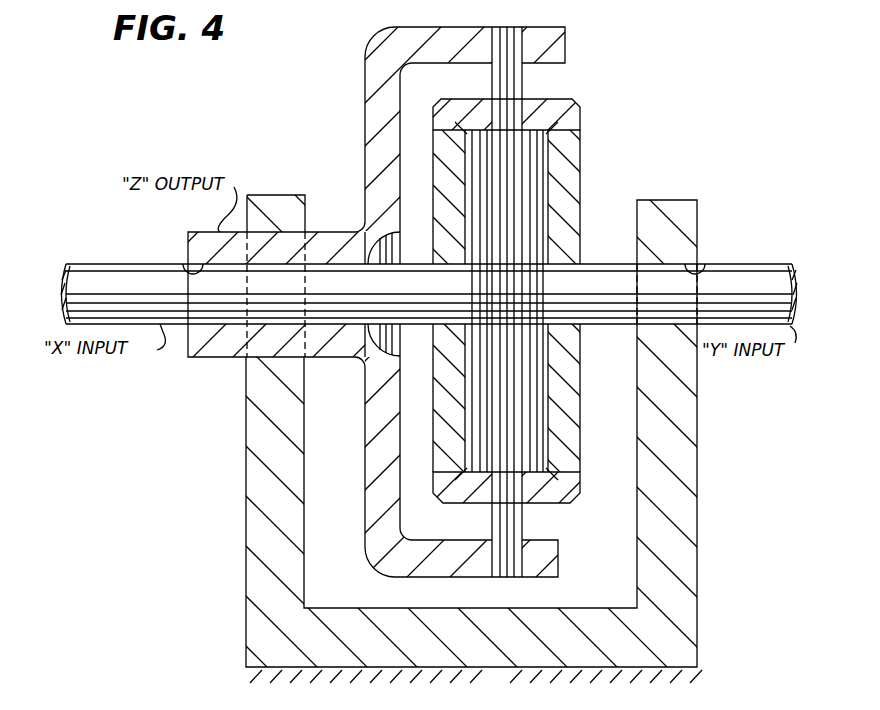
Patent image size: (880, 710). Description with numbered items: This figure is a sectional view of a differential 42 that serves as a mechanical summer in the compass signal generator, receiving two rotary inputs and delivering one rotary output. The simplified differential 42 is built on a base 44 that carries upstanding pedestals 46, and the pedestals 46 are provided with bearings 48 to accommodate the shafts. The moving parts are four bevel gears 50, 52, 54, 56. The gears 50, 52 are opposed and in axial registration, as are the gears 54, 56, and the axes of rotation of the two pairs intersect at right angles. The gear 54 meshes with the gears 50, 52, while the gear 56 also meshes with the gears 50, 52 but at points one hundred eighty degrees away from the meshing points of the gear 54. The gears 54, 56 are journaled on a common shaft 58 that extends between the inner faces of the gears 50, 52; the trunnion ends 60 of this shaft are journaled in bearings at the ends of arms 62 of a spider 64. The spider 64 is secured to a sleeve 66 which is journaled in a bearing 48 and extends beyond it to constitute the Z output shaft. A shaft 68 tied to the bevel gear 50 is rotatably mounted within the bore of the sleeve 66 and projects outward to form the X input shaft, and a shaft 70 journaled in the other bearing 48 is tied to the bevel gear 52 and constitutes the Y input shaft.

The differential 42 is at (640, 90).
The base 44 is at (482, 657).
The pedestals 46 is at (246, 535).
The bearings 48 is at (181, 262).
The bevel gear 50 is at (434, 395).
The bevel gear 52 is at (578, 163).
The bevel gear 54 is at (540, 113).
The bevel gear 56 is at (545, 501).
The common shaft 58 is at (527, 222).
The trunnion ends 60 is at (509, 43).
The arms 62 is at (480, 27).
The spider 64 is at (358, 428).
The sleeve 66 is at (327, 231).
The shaft 68 is at (115, 262).
The shaft 70 is at (786, 252).